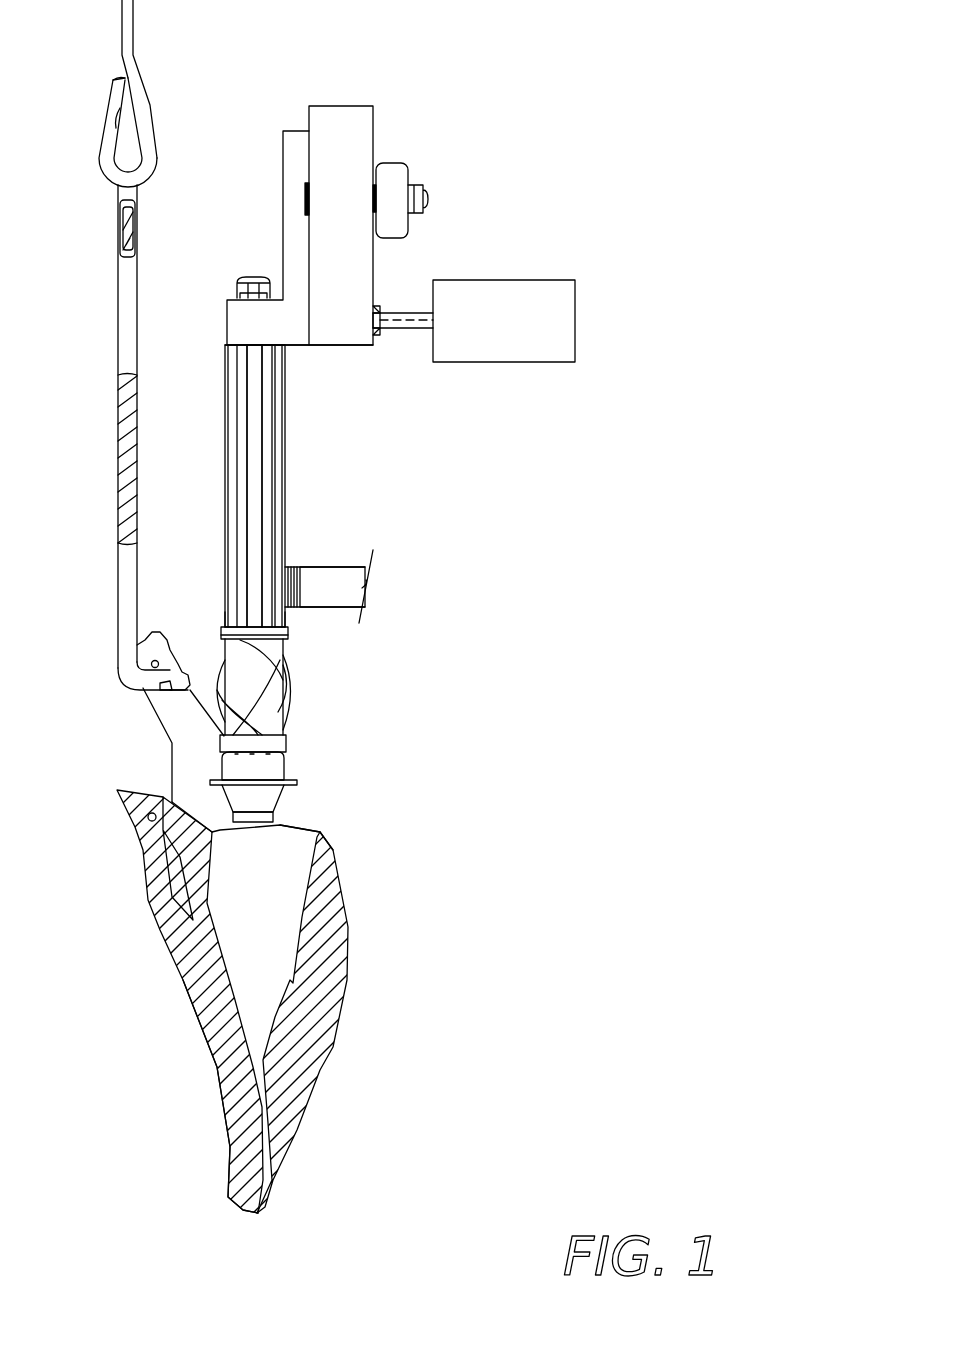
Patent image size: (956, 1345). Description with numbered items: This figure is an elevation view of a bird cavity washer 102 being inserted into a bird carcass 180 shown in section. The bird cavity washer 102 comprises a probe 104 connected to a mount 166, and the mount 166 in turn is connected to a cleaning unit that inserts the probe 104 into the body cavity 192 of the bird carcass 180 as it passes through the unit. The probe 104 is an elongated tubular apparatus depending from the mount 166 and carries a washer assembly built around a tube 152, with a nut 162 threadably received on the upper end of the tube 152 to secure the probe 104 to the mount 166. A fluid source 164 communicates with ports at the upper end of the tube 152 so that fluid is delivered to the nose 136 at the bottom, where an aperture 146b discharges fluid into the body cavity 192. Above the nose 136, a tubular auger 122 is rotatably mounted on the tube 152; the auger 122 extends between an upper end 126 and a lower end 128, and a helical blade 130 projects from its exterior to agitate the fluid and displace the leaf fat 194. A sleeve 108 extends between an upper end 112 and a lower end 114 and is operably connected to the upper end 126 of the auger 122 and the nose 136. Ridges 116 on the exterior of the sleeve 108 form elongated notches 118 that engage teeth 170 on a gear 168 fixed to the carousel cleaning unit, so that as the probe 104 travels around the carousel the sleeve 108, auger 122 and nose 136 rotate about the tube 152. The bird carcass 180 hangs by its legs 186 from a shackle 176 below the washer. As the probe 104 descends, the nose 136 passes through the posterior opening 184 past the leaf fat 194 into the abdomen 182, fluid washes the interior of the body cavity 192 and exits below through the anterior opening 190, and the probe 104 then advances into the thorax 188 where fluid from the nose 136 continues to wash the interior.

The bird cavity washer 102 is at (405, 448).
The probe 104 is at (365, 730).
The sleeve 108 is at (253, 455).
The upper end of sleeve 112 is at (225, 345).
The lower end of sleeve 114 is at (223, 630).
The ridges 116 is at (262, 425).
The elongated notches 118 is at (265, 383).
The auger 122 is at (262, 692).
The upper end of auger 126 is at (290, 635).
The lower end of auger 128 is at (222, 745).
The helical blade 130 is at (280, 728).
The nose 136 is at (288, 770).
The aperture 146b is at (253, 800).
The tube 152 is at (252, 277).
The nut 162 is at (240, 283).
The fluid source 164 is at (540, 365).
The mount 166 is at (432, 140).
The gear 168 is at (350, 582).
The teeth 170 is at (294, 565).
The shackle 176 is at (118, 312).
The bird carcass 180 is at (397, 1005).
The abdomen 182 is at (222, 923).
The posterior opening 184 is at (322, 835).
The legs 186 is at (162, 702).
The thorax 188 is at (245, 1000).
The anterior opening 190 is at (260, 1070).
The body cavity 192 is at (268, 962).
The leaf fat 194 is at (203, 877).